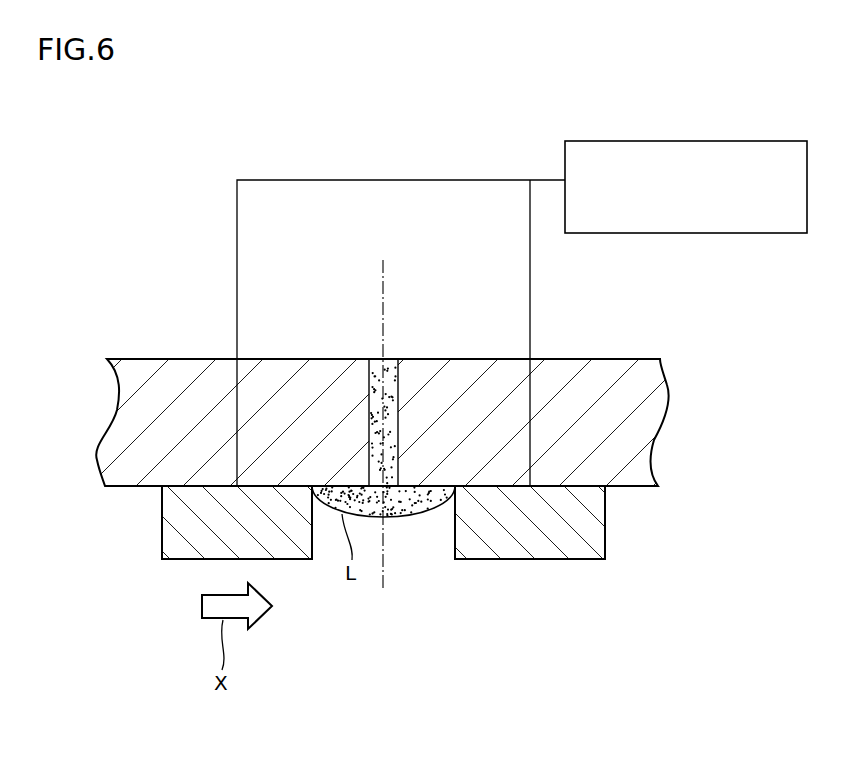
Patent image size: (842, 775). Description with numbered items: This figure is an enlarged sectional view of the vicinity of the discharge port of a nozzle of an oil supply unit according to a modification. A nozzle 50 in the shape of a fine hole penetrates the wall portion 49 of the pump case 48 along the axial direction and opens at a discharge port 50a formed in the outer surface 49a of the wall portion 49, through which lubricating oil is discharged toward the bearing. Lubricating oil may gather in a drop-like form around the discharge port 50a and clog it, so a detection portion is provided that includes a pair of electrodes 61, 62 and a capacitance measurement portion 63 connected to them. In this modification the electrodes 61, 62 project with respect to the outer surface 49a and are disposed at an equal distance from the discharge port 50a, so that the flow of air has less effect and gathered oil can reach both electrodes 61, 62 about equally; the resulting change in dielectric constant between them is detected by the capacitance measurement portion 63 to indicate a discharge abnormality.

The capacitance measurement portion 63 is at (646, 141).
The wall portion 49 is at (124, 388).
The nozzle 50 is at (390, 400).
The discharge port 50a is at (405, 496).
The outer surface 49a is at (148, 488).
The electrode 61 is at (181, 545).
The electrode 62 is at (552, 545).
The pump case 48 is at (628, 500).